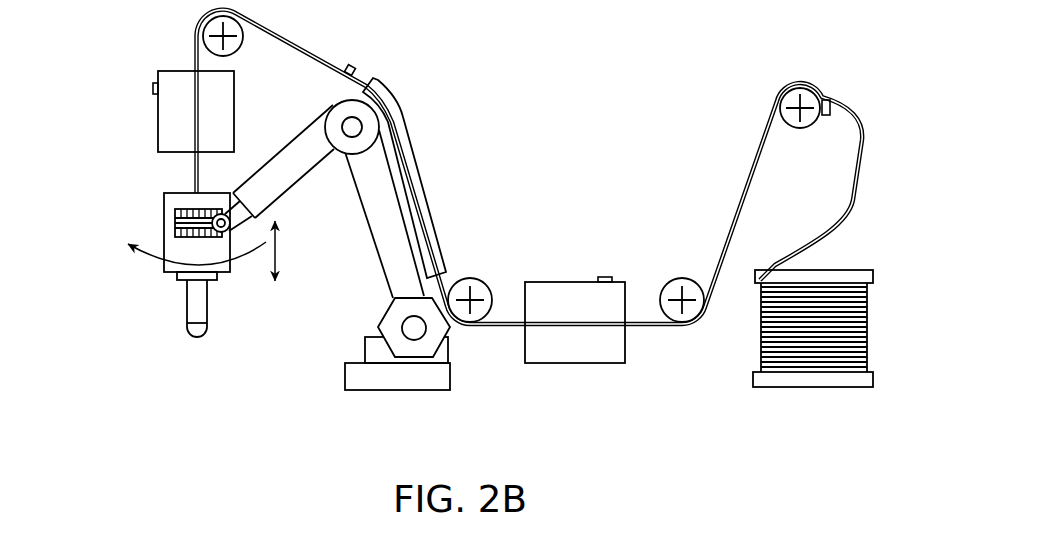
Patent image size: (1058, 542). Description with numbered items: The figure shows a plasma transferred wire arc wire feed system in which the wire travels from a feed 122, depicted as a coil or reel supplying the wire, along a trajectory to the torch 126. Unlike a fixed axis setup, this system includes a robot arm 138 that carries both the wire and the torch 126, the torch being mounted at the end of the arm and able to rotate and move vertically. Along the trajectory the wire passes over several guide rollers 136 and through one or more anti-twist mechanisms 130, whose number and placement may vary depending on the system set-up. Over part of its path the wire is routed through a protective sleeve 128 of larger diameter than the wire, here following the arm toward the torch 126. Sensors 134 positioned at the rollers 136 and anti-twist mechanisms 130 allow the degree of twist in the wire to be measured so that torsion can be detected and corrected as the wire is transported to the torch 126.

The spool of filament 122 is at (862, 262).
The torch 126 is at (233, 276).
The guide channel 128 is at (430, 186).
The anti-twist mechanism 130 is at (156, 130).
The sensor 134 is at (151, 81).
The guide rollers 136 is at (243, 48).
The robot arm 138 is at (364, 233).